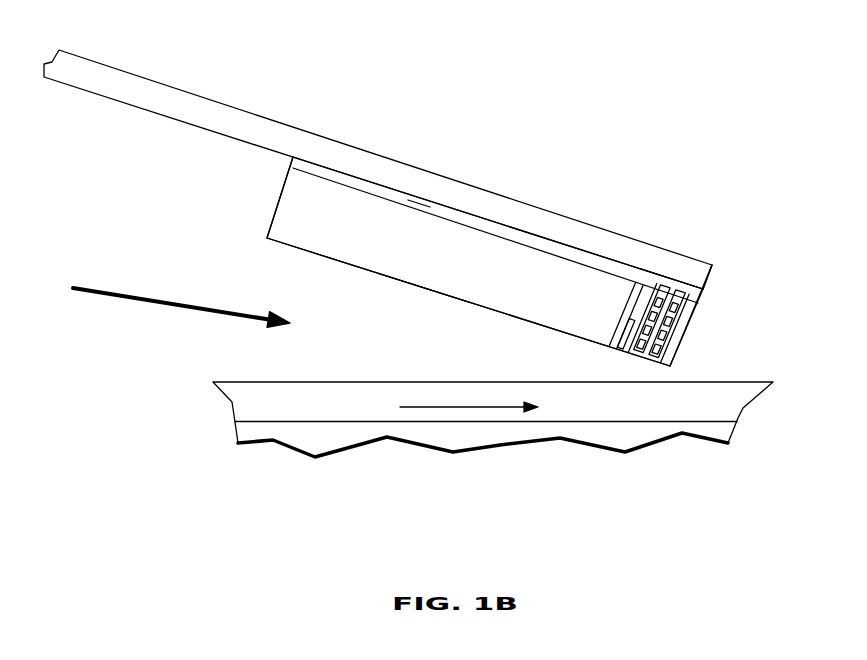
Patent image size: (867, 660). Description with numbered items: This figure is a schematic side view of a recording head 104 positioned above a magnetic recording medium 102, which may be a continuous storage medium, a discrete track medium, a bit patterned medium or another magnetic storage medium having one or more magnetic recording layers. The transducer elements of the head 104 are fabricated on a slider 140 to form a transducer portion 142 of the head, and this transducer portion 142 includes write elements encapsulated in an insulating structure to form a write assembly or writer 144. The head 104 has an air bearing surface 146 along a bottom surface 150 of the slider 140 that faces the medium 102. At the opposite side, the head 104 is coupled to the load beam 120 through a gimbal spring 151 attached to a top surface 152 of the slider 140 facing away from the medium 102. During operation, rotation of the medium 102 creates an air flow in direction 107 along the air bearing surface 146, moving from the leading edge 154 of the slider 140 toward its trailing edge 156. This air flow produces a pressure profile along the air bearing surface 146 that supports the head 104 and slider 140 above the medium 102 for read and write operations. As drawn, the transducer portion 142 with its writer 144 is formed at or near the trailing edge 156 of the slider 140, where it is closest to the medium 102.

The medium 102 is at (693, 407).
The head 104 is at (705, 258).
The direction of air flow 107 is at (467, 407).
The load beam 120 is at (312, 146).
The slider 140 is at (457, 253).
The transducer portion 142 is at (708, 302).
The writer 144 is at (679, 272).
The air bearing surface 146 is at (422, 298).
The bottom surface 150 is at (548, 330).
The gimbal spring 151 is at (422, 204).
The top surface 152 is at (548, 247).
The leading edge 154 is at (277, 218).
The trailing edge 156 is at (690, 325).